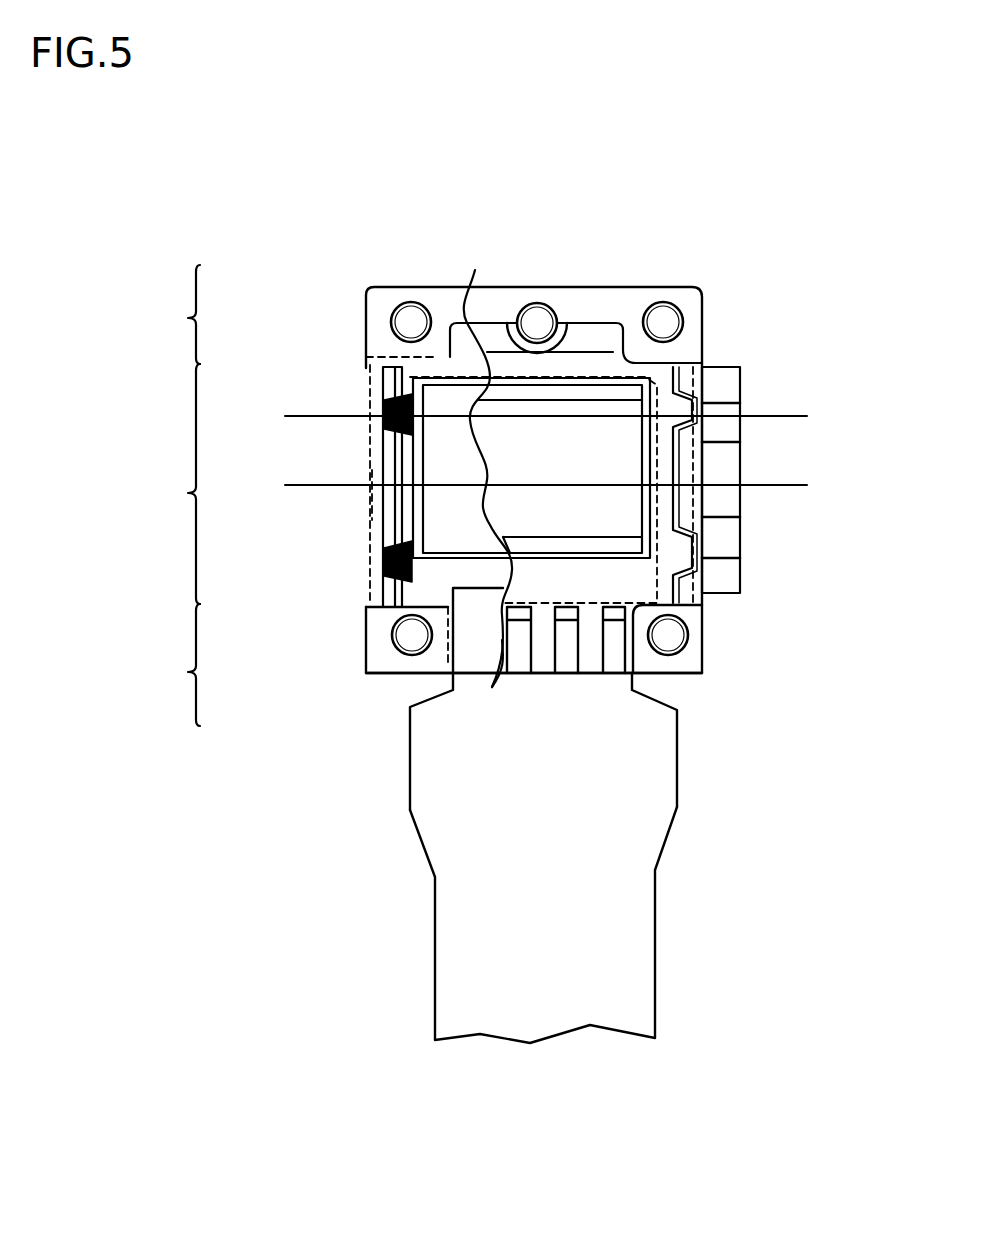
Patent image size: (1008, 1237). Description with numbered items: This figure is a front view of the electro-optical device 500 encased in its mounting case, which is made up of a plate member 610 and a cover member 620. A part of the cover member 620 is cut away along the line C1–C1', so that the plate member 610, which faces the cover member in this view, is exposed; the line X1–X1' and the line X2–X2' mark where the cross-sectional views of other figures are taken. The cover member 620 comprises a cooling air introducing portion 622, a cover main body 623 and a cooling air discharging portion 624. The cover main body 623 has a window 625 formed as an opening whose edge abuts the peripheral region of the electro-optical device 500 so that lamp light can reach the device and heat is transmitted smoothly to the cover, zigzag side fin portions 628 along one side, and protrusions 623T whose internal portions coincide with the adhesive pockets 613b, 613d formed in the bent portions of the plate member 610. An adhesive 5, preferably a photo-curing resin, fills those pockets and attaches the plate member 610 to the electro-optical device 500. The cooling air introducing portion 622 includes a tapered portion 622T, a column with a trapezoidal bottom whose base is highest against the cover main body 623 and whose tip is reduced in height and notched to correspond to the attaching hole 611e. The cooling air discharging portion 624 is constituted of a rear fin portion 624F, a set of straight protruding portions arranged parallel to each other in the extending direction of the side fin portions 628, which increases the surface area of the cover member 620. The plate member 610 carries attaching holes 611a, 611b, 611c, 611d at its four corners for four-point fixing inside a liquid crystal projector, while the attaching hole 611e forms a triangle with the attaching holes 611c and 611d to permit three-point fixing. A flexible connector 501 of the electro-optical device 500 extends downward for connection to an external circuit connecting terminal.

The plate member 610 is at (701, 287).
The cover member 620 is at (768, 332).
The cooling air introducing portion 622 is at (186, 316).
The tapered portion 622T is at (593, 333).
The cover main body 623 is at (186, 495).
The protrusions 623T is at (373, 503).
The cooling air discharging portion 624 is at (192, 672).
The rear fin portion 624F is at (567, 663).
The electro-optical device 500 is at (445, 380).
The flexible connector 501 is at (440, 863).
The attaching hole 611a is at (651, 306).
The attaching hole 611b is at (398, 302).
The attaching hole 611c is at (684, 648).
The attaching hole 611d is at (398, 650).
The attaching hole 611e is at (537, 302).
The adhesive pocket 613b is at (382, 400).
The adhesive pocket 613d is at (382, 562).
The adhesive 5 is at (372, 433).
The window 625 is at (572, 537).
The side fin portions 628 is at (740, 578).
The cut line C1 is at (486, 463).
The cut line C1' is at (499, 682).
The section line X1 is at (395, 420).
The section line X1' is at (705, 416).
The section line X2 is at (395, 489).
The section line X2' is at (705, 484).